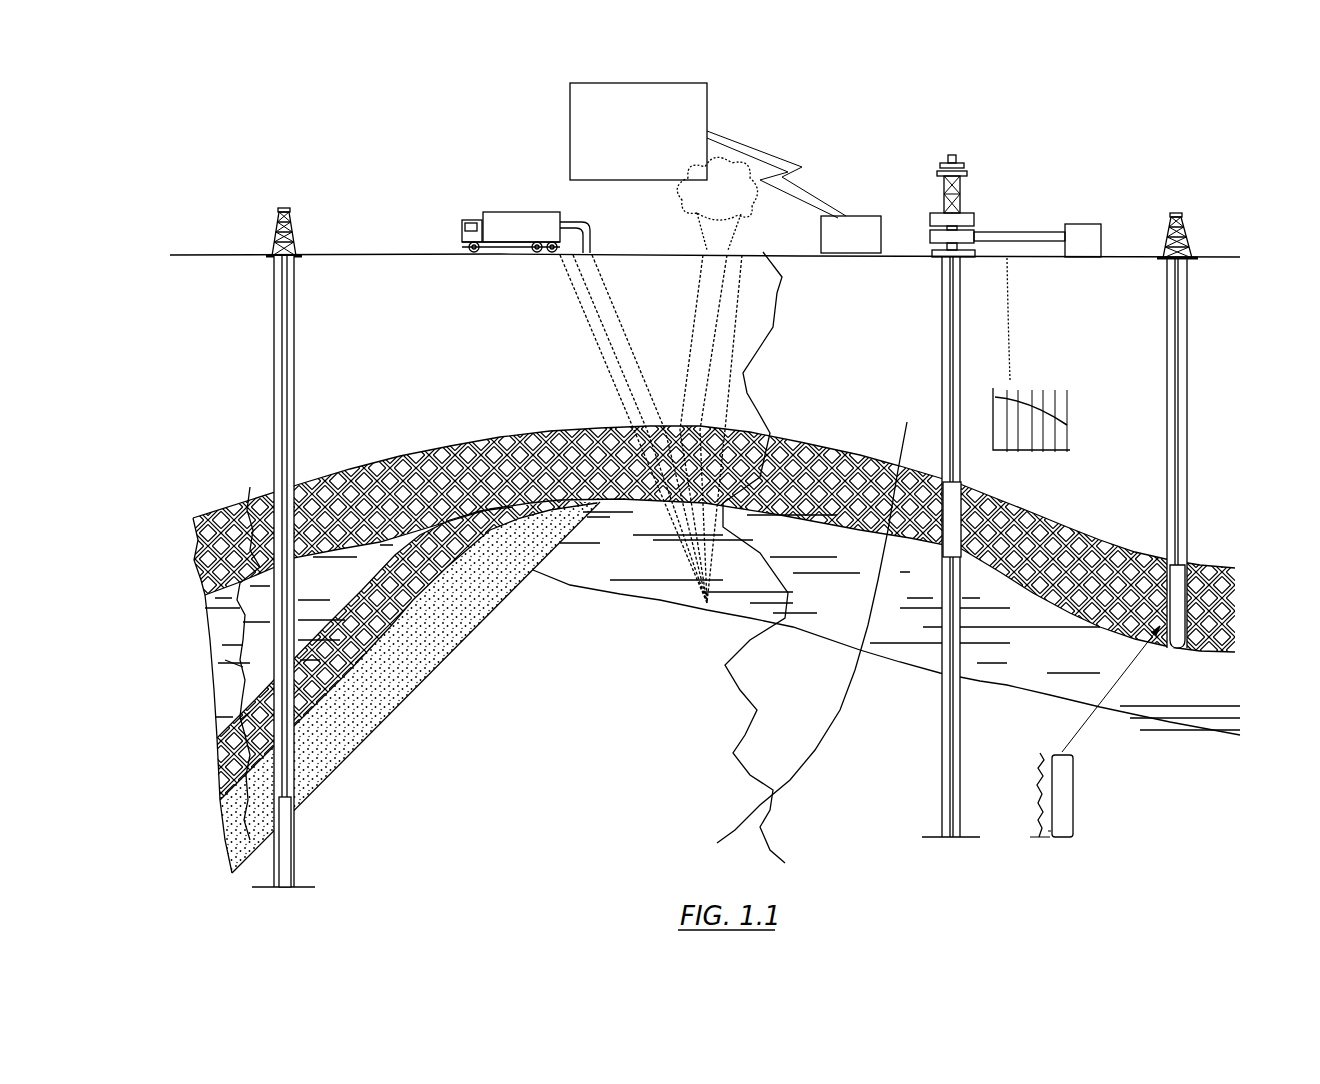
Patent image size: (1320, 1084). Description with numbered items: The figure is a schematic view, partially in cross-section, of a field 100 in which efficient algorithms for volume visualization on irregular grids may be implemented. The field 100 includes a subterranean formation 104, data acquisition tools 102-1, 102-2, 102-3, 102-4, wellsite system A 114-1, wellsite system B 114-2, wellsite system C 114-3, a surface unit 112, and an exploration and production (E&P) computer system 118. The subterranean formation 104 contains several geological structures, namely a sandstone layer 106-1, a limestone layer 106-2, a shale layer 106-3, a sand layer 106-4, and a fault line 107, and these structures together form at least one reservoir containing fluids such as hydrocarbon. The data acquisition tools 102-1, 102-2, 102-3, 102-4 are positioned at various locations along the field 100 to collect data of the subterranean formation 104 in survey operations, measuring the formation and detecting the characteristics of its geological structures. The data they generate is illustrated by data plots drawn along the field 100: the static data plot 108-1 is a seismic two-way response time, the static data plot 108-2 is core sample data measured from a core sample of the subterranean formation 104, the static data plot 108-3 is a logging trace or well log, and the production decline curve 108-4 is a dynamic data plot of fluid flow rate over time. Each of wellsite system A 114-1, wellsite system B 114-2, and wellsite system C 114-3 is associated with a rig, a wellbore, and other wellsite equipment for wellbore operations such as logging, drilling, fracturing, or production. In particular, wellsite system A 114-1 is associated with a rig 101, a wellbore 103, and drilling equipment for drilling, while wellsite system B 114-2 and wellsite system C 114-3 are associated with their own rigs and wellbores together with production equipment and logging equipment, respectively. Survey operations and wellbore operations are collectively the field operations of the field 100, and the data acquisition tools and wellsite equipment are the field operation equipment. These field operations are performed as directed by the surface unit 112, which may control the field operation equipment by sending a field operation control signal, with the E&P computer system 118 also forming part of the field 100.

The field 100 is at (257, 144).
The rig 101 is at (256, 209).
The data acquisition tool 102-1 is at (490, 212).
The data acquisition tool 102-2 is at (1162, 658).
The data acquisition tool 102-3 is at (293, 838).
The data acquisition tool 102-4 is at (1006, 529).
The wellbore 103 is at (310, 357).
The subterranean formation 104 is at (584, 685).
The sandstone layer 106-1 is at (420, 492).
The limestone layer 106-2 is at (346, 587).
The shale layer 106-3 is at (407, 606).
The sand layer 106-4 is at (447, 654).
The fault line 107 is at (905, 422).
The static data plot 108-1 is at (757, 712).
The static data plot 108-2 is at (1038, 765).
The static data plot 108-3 is at (212, 663).
The production decline curve 108-4 is at (1037, 455).
The surface unit 112 is at (835, 247).
The wellsite system A 114-1 is at (428, 216).
The wellsite system B 114-2 is at (972, 128).
The wellsite system C 114-3 is at (1143, 202).
The exploration and production (E&P) computer system 118 is at (626, 168).